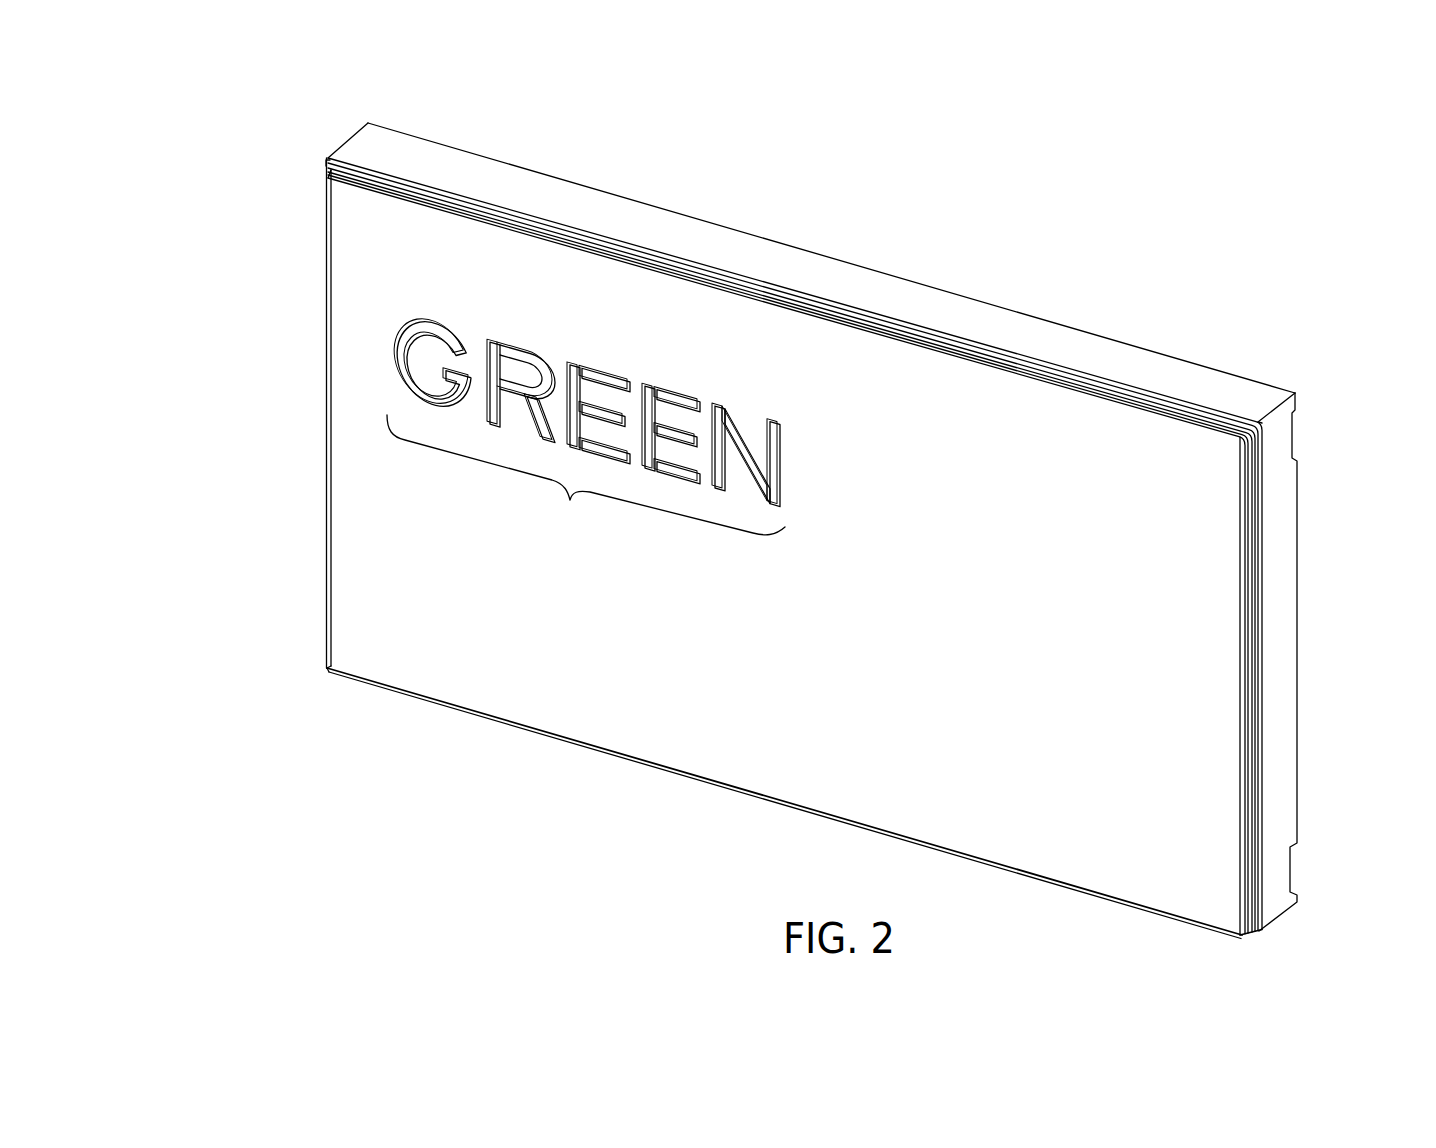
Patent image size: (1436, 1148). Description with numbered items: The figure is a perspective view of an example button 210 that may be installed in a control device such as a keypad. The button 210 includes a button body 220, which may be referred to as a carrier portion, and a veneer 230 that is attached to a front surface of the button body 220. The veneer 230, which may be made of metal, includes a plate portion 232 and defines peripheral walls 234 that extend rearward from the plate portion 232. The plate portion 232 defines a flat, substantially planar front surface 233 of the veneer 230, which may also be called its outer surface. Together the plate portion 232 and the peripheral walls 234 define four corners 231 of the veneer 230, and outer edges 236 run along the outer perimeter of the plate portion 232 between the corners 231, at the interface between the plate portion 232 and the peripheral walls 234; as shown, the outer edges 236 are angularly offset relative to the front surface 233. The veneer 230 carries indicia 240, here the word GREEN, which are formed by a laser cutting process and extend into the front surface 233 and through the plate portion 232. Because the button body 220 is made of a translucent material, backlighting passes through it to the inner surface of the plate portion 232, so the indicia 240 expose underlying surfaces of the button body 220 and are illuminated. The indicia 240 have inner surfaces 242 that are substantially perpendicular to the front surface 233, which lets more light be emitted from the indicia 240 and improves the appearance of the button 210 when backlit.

The button 210 is at (258, 153).
The button body 220 is at (818, 277).
The veneer 230 is at (425, 268).
The corners 231 is at (318, 160).
The plate portion 232 is at (387, 483).
The front surface 233 is at (433, 617).
The peripheral walls 234 is at (975, 350).
The outer edges 236 is at (326, 323).
The indicia 240 is at (570, 500).
The inner surfaces 242 is at (523, 350).